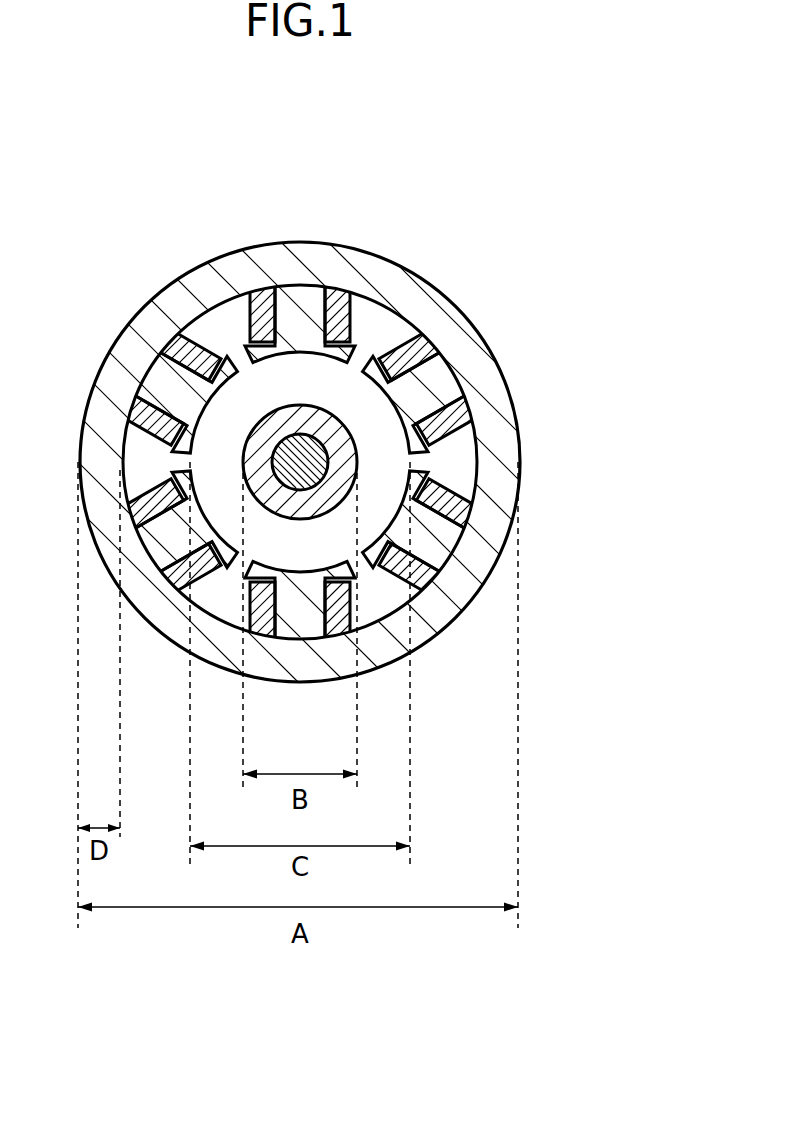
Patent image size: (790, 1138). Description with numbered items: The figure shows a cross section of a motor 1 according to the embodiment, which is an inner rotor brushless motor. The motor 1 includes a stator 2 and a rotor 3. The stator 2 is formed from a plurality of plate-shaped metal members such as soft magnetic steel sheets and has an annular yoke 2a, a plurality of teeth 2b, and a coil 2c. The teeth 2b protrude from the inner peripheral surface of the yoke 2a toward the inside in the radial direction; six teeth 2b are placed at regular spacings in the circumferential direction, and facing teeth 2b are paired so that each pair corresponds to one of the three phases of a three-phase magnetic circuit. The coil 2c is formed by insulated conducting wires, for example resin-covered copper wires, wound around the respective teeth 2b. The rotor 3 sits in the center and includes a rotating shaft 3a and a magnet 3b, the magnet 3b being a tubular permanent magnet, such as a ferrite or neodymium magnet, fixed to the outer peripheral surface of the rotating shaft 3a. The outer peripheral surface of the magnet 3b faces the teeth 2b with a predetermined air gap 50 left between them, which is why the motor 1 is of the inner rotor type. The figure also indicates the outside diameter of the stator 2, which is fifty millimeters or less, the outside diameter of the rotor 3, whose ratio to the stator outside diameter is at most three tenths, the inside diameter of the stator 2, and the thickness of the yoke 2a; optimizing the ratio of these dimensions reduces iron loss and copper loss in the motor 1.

The motor 1 is at (534, 198).
The stator 2 is at (631, 322).
The annular yoke 2a is at (500, 417).
The teeth 2b is at (437, 379).
The coil 2c is at (420, 347).
The rotor 3 is at (268, 152).
The rotating shaft 3a is at (298, 458).
The magnet 3b is at (303, 433).
The air gap 50 is at (350, 397).